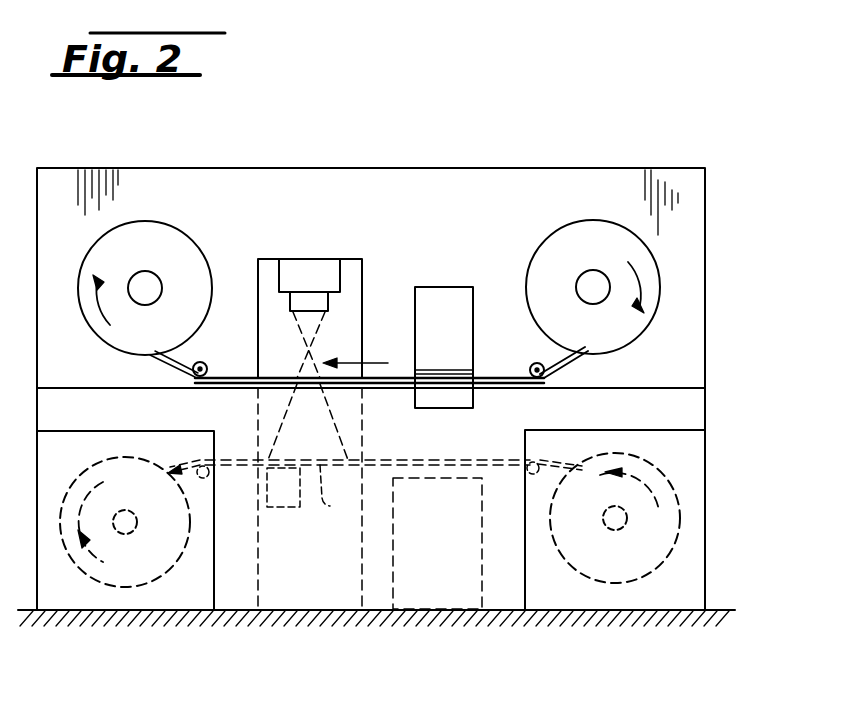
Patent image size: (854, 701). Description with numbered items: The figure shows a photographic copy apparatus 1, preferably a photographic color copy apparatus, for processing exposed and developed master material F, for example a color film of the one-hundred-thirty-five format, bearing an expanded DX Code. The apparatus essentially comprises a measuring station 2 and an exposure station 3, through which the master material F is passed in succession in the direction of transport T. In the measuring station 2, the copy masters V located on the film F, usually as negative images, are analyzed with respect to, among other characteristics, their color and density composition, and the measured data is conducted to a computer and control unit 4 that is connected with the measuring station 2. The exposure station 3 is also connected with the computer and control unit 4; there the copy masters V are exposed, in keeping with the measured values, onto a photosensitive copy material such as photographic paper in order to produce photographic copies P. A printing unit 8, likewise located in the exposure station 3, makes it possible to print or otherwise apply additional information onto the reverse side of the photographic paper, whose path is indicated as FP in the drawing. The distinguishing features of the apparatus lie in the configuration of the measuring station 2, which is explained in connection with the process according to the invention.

The photographic printing apparatus 1 is at (592, 160).
The exposure / processing unit 2 is at (447, 297).
The optical head with lens 3 is at (302, 252).
The processing station (dashed) 4 is at (430, 588).
The sensor unit (dashed) 8 is at (279, 507).
The paper path P is at (332, 493).
The exposure axis V is at (308, 372).
The transport direction T is at (346, 362).
The film F is at (566, 373).
The photographic paper path FP is at (465, 459).